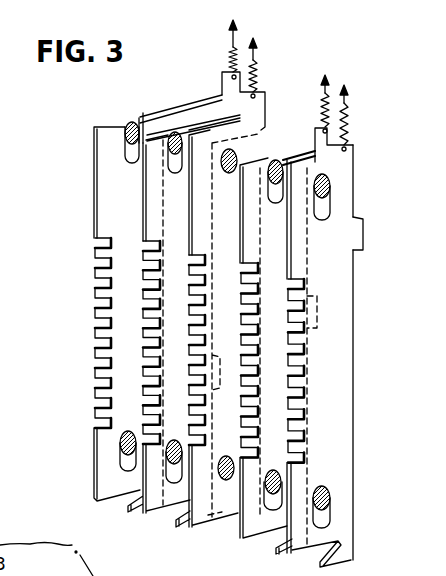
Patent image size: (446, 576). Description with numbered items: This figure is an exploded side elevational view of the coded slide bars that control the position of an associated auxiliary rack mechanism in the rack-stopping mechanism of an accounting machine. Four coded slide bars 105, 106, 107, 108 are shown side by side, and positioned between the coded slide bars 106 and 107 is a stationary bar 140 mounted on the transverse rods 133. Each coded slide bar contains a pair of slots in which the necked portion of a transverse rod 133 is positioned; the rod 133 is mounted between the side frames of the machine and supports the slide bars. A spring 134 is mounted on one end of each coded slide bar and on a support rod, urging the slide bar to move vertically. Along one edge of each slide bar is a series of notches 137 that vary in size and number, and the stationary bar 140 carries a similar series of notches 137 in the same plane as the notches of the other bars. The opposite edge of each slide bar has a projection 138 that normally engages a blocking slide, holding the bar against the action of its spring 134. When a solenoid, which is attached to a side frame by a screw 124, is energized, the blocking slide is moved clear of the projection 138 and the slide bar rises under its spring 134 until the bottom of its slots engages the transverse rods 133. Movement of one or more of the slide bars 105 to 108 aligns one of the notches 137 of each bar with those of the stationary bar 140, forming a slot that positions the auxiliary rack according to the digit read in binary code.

The coded slide bar 105 is at (354, 304).
The coded slide bar 106 is at (252, 538).
The coded slide bar 107 is at (143, 222).
The coded slide bar 108 is at (94, 185).
The screw 124 is at (33, 561).
The transverse rod 133 is at (128, 121).
The spring 134 is at (347, 116).
The notches 137 is at (97, 395).
The projection 138 is at (363, 222).
The stationary bar 140 is at (262, 143).